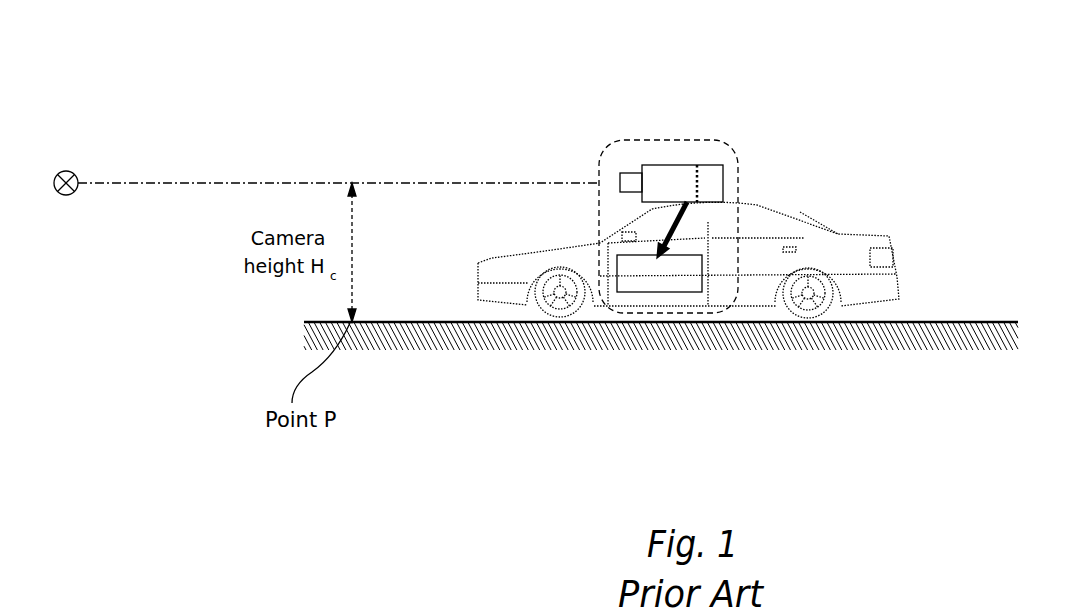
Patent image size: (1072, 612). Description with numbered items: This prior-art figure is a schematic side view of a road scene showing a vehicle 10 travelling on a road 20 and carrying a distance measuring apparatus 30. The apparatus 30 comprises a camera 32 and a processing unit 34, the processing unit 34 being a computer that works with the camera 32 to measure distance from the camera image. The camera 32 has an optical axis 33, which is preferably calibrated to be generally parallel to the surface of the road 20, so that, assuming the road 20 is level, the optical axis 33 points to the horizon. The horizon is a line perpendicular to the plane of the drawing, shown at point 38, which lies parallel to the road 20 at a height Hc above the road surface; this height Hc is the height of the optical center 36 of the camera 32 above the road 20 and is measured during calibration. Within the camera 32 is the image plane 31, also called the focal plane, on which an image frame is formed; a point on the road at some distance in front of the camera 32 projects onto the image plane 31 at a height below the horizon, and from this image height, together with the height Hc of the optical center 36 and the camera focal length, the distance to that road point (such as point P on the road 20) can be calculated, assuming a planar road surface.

The vehicle 10 is at (846, 193).
The road 20 is at (912, 323).
The distance measuring apparatus 30 is at (678, 132).
The image plane 31 is at (698, 177).
The camera 32 is at (657, 165).
The optical axis 33 is at (420, 182).
The processing unit 34 is at (655, 268).
The optical center 36 is at (619, 183).
The point representing the horizon 38 is at (70, 172).